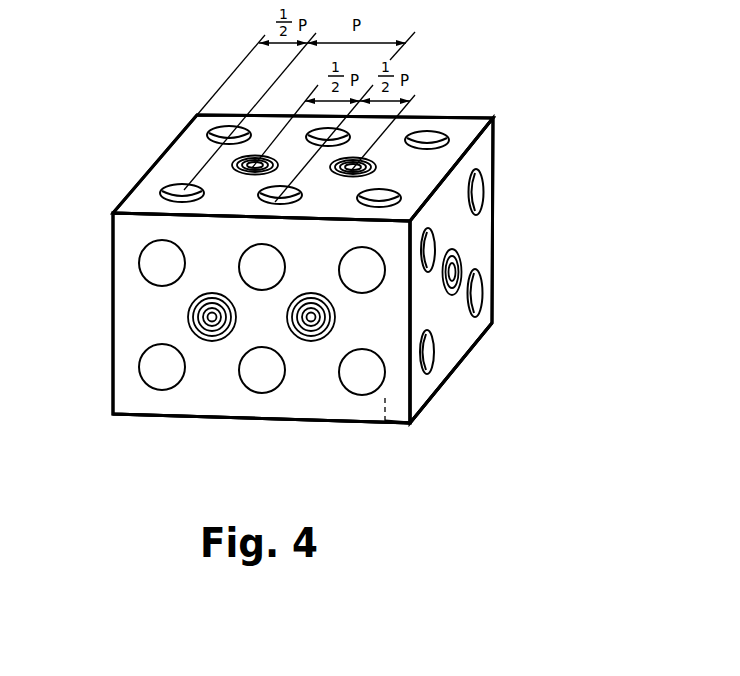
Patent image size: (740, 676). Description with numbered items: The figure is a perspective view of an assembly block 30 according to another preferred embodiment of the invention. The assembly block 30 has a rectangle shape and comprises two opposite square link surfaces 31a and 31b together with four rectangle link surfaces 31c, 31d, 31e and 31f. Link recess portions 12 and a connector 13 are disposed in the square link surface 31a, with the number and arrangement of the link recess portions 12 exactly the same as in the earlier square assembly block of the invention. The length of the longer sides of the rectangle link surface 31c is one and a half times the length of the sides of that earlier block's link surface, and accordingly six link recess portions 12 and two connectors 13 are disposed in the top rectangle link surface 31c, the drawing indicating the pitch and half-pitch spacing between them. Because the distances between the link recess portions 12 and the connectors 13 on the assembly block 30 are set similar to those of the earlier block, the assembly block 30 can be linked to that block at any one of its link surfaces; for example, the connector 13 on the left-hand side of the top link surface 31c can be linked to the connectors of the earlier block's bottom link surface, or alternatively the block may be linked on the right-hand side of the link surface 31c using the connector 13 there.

The link recess portion 12 is at (208, 131).
The connector 13 is at (245, 170).
The assembly block 30 is at (521, 106).
The square link surface 31a is at (455, 336).
The square link surface 31b is at (128, 302).
The rectangle link surface 31c is at (465, 135).
The rectangle link surface 31d is at (276, 401).
The rectangle link surface 31e is at (385, 422).
The rectangle link surface 31f is at (468, 253).